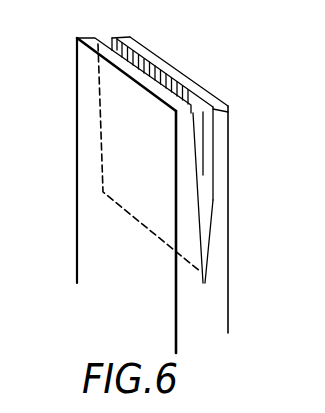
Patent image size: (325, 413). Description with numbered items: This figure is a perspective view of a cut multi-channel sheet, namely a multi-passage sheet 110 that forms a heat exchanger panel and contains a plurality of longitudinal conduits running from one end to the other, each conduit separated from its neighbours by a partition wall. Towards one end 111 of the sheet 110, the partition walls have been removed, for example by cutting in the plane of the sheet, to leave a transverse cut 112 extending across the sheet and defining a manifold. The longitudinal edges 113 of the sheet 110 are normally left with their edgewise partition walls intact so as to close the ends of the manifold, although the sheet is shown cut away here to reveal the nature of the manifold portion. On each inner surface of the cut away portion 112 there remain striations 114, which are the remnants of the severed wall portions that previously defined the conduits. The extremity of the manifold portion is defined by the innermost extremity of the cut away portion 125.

The multi-passage sheet 110 is at (237, 291).
The end of sheet 111 is at (180, 77).
The transverse cut 112 is at (206, 196).
The longitudinal edges 113 is at (78, 186).
The striations 114 is at (200, 135).
The innermost extremity of the cut away portion 125 is at (146, 238).